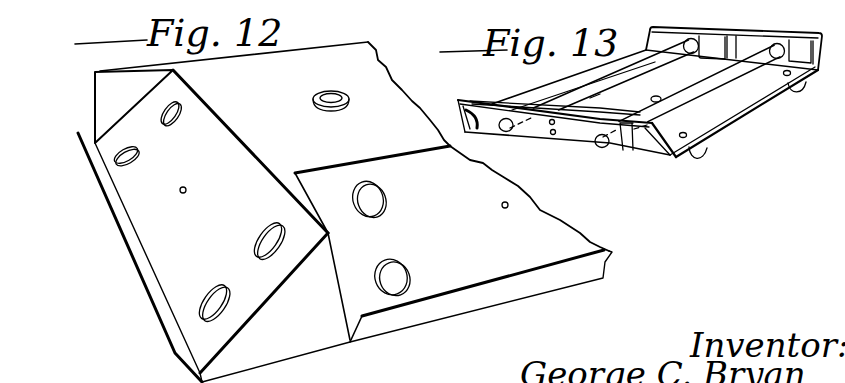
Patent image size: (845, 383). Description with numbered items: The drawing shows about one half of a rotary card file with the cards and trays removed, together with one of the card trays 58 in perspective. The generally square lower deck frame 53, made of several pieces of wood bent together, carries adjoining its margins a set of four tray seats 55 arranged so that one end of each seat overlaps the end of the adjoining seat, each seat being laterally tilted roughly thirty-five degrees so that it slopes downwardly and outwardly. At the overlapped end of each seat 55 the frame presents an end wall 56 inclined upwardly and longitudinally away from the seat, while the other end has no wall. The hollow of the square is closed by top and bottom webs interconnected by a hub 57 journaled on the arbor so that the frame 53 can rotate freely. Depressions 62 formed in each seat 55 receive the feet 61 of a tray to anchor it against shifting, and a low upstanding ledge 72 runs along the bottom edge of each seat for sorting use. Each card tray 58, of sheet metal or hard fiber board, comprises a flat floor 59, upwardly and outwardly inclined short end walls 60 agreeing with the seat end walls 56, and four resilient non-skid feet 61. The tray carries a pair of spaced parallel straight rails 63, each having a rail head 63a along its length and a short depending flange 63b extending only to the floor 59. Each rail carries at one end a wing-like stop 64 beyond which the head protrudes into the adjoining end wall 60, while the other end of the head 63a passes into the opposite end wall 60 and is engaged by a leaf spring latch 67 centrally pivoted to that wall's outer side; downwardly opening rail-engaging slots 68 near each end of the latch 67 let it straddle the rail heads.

In FIG. 12, the lower deck frame 53 is at (387, 92).
In FIG. 12, the tray seat 55 is at (167, 260).
In FIG. 12, the end wall 56 is at (107, 95).
In FIG. 12, the hub 57 is at (340, 106).
In FIG. 12, the depressions 62 is at (161, 124).
In FIG. 12, the ledge 72 is at (84, 133).
In FIG. 13, the card tray 58 is at (740, 122).
In FIG. 13, the floor 59 is at (745, 103).
In FIG. 13, the end wall 60 is at (652, 143).
In FIG. 13, the feet 61 is at (803, 89).
In FIG. 13, the rail 63 is at (696, 85).
In FIG. 13, the rail head 63a is at (720, 36).
In FIG. 13, the depending flange 63b is at (596, 96).
In FIG. 13, the wing-like stop 64 is at (731, 35).
In FIG. 13, the leaf spring latch 67 is at (574, 136).
In FIG. 13, the rail-engaging slot 68 is at (508, 133).